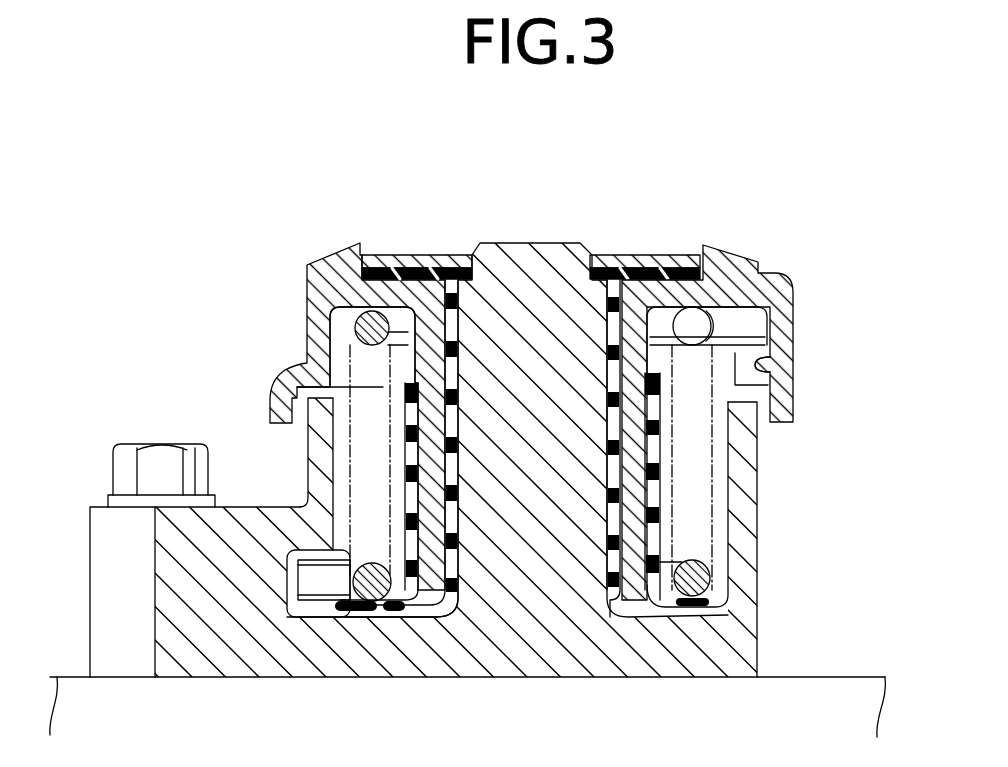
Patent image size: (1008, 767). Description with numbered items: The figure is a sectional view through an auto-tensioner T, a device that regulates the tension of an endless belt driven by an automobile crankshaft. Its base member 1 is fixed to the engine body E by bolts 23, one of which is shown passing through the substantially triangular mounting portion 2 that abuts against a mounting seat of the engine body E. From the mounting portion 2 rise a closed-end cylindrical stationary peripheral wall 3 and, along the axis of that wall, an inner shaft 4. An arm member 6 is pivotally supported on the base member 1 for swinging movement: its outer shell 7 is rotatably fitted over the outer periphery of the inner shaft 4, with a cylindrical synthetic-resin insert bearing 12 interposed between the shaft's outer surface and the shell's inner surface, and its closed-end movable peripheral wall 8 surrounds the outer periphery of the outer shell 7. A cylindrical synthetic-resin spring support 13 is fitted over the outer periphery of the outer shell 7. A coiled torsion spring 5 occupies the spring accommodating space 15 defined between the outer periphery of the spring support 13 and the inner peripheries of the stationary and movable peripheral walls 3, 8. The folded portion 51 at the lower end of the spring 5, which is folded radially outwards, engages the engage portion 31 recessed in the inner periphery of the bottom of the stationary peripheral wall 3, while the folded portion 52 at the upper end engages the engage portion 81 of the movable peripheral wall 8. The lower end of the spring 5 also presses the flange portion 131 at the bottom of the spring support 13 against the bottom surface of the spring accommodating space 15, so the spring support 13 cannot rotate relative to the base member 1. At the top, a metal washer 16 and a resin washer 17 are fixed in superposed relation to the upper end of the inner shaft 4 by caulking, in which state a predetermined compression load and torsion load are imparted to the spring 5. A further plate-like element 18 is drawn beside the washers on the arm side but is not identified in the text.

The base member 1 is at (245, 457).
The mounting portion 2 is at (112, 575).
The stationary peripheral wall 3 is at (763, 452).
The inner shaft 4 is at (541, 250).
The coiled torsion spring 5 is at (691, 553).
The arm member 6 is at (770, 262).
The outer shell 7 is at (660, 454).
The movable peripheral wall 8 is at (277, 387).
The insert bearing 12 is at (456, 452).
The spring support 13 is at (398, 492).
The flange portion 131 is at (737, 617).
The spring accommodating space 15 is at (387, 472).
The metal washer 16 is at (401, 253).
The resin washer 17 is at (448, 253).
The plate 18 is at (591, 252).
The bolt 23 is at (125, 464).
The engage portion 31 is at (300, 607).
The folded portion 51 is at (327, 583).
The folded portion 52 is at (745, 320).
The engage portion 81 is at (765, 368).
The auto-tensioner T is at (676, 180).
The engine body E is at (825, 693).